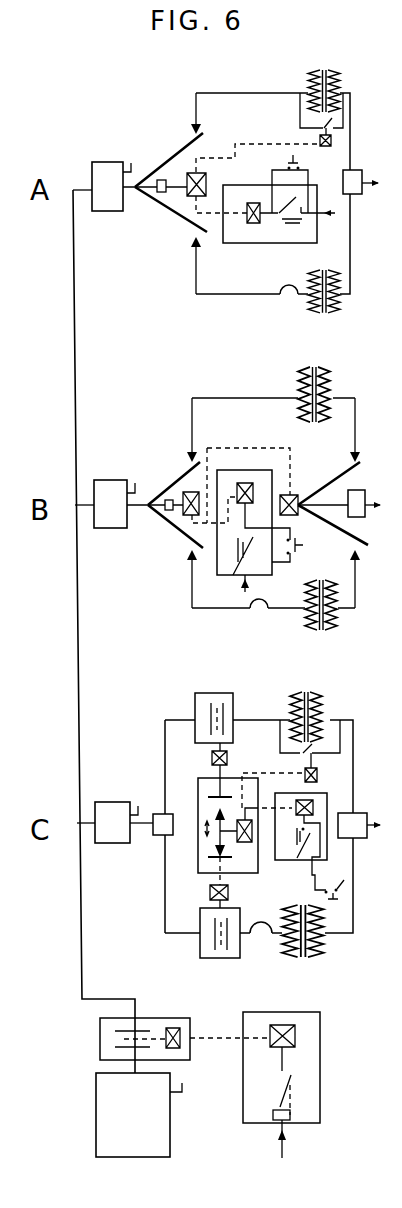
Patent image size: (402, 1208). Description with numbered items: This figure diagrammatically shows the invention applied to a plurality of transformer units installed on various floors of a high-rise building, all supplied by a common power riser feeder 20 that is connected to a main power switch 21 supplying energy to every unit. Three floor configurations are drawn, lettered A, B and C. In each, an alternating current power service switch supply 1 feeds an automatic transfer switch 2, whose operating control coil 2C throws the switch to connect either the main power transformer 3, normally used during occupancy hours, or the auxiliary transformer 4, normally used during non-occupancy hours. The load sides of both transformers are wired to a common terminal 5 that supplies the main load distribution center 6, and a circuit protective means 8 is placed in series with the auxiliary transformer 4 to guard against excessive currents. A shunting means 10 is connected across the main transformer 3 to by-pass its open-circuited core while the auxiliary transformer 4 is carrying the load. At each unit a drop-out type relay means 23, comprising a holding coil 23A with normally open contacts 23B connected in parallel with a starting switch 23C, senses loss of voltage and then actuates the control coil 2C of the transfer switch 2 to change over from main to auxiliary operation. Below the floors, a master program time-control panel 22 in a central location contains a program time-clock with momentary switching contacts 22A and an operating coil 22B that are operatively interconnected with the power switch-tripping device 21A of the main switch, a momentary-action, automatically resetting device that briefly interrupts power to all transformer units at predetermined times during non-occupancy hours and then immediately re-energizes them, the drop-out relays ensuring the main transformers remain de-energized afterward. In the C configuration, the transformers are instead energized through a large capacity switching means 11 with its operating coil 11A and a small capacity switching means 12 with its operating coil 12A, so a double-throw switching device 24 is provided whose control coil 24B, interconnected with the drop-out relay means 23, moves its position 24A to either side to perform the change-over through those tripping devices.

The alternating current power service switch supply 1 is at (125, 160).
The automatic transfer switch 2 is at (163, 200).
The operating control coil 2C is at (206, 178).
The main power transformer 3 is at (337, 74).
The auxiliary transformer 4 is at (336, 308).
The common terminal 5 is at (352, 170).
The main load distribution center 6 is at (368, 180).
The circuit protective means 8 is at (285, 298).
The shunting means 10 is at (320, 455).
The switching means of large capacity 11 is at (233, 693).
The operating coil 11A is at (230, 752).
The switching means of small capacity 12 is at (206, 933).
The operating coil 12A is at (233, 896).
The common power riser feeder 20 is at (84, 968).
The main power switch 21 is at (165, 1143).
The power switch-tripping device 21A is at (166, 1022).
The master program time-control panel 22 is at (320, 1060).
The momentary switching contacts 22A is at (279, 1088).
The operating coil 22B is at (300, 1025).
The drop-out type relay means 23 is at (306, 171).
The holding coil 23A is at (253, 225).
The normally open contacts 23B is at (303, 884).
The starting switch 23C is at (301, 525).
The double-throw switching device 24 is at (198, 780).
The position 24A is at (208, 860).
The control coil 24B is at (236, 839).